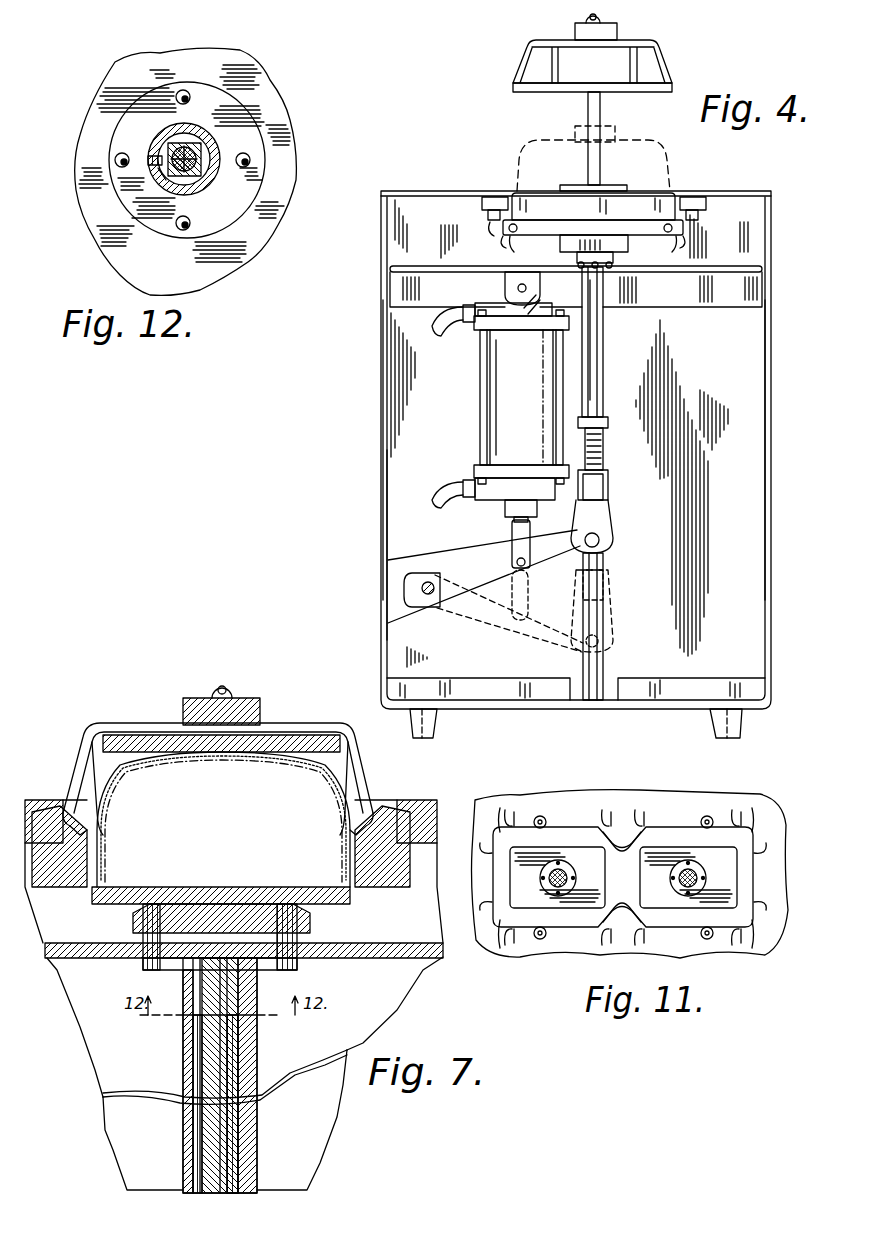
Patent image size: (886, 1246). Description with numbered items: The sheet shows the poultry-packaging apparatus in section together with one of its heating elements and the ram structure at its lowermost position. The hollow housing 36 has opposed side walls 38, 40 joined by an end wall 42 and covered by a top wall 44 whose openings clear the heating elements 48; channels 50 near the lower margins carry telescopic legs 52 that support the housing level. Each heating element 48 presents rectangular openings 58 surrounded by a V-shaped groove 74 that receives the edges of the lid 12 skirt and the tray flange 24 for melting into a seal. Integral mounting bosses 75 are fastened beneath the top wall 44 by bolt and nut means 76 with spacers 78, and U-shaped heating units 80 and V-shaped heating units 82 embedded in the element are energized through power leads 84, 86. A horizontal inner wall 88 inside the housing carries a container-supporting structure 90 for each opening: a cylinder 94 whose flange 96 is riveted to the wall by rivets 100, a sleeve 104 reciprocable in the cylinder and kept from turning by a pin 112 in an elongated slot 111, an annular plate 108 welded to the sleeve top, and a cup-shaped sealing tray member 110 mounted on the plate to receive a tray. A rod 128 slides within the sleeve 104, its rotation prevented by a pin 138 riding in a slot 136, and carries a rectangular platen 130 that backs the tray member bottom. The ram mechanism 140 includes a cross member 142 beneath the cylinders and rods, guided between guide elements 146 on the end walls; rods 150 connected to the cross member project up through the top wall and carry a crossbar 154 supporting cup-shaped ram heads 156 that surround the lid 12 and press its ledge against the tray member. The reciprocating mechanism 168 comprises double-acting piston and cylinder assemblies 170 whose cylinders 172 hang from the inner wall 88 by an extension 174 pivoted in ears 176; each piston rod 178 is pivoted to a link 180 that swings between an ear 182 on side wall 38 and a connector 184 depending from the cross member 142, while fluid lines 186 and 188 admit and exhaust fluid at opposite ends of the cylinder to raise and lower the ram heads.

In FIG. 7, the lid 12 is at (313, 751).
In FIG. 7, the downturned flange portion 24 is at (332, 794).
In FIG. 4, the housing 36 is at (373, 432).
In FIG. 4, the side wall 38 is at (382, 490).
In FIG. 4, the side wall 40 is at (771, 479).
In FIG. 4, the end wall 42 is at (752, 347).
In FIG. 4, the top wall 44 is at (736, 191).
In FIG. 7, the top wall 44 is at (428, 801).
In FIG. 4, the heating element 48 is at (516, 238).
In FIG. 11, the heating element 48 is at (668, 826).
In FIG. 4, the channel 50 is at (506, 690).
In FIG. 11, the channel 50 is at (594, 910).
In FIG. 4, the telescopic leg 52 is at (714, 720).
In FIG. 11, the rectangular opening 58 is at (562, 846).
In FIG. 4, the V-shaped groove 74 is at (705, 210).
In FIG. 11, the mounting boss 75 is at (710, 816).
In FIG. 4, the bolt and nut means 76 is at (490, 226).
In FIG. 4, the spacer 78 is at (486, 200).
In FIG. 11, the heating unit 80 is at (754, 846).
In FIG. 11, the V-shaped heating unit 82 is at (611, 822).
In FIG. 11, the power lead 84 is at (486, 846).
In FIG. 11, the power lead 86 is at (510, 820).
In FIG. 12, the inner wall 88 is at (176, 276).
In FIG. 4, the inner wall 88 is at (658, 272).
In FIG. 7, the inner wall 88 is at (358, 958).
In FIG. 4, the container-supporting structure 90 is at (604, 333).
In FIG. 7, the container-supporting structure 90 is at (265, 1050).
In FIG. 12, the cylinder 94 is at (200, 144).
In FIG. 4, the cylinder 94 is at (603, 373).
In FIG. 7, the cylinder 94 is at (256, 1119).
In FIG. 12, the flange 96 is at (174, 230).
In FIG. 12, the rivet 100 is at (251, 160).
In FIG. 12, the sleeve 104 is at (199, 192).
In FIG. 4, the sleeve 104 is at (608, 438).
In FIG. 7, the sleeve 104 is at (192, 1041).
In FIG. 7, the annular plate 108 is at (300, 926).
In FIG. 7, the sealing tray member 110 is at (86, 903).
In FIG. 12, the elongated slot 111 is at (155, 168).
In FIG. 12, the pin 112 is at (158, 155).
In FIG. 12, the rod 128 is at (186, 130).
In FIG. 4, the rod 128 is at (605, 468).
In FIG. 7, the rod 128 is at (200, 1141).
In FIG. 7, the platen 130 is at (136, 917).
In FIG. 12, the elongated slot 136 is at (212, 175).
In FIG. 12, the pin 138 is at (212, 155).
In FIG. 4, the ram mechanism 140 is at (553, 568).
In FIG. 4, the cross member 142 is at (610, 486).
In FIG. 4, the guide element 146 is at (590, 702).
In FIG. 4, the rod 150 is at (600, 102).
In FIG. 4, the crossbar 154 is at (608, 29).
In FIG. 7, the crossbar 154 is at (246, 698).
In FIG. 4, the ram head 156 is at (666, 54).
In FIG. 7, the ram head 156 is at (98, 737).
In FIG. 4, the reciprocating mechanism 168 is at (621, 531).
In FIG. 4, the double-acting piston and cylinder assembly 170 is at (467, 424).
In FIG. 4, the cylinder 172 is at (498, 368).
In FIG. 4, the extension 174 is at (532, 318).
In FIG. 4, the ear 176 is at (505, 284).
In FIG. 4, the piston rod 178 is at (511, 519).
In FIG. 4, the link 180 is at (452, 568).
In FIG. 4, the ear 182 is at (416, 607).
In FIG. 4, the connector 184 is at (606, 509).
In FIG. 4, the fluid line 186 is at (447, 328).
In FIG. 4, the fluid line 188 is at (458, 486).